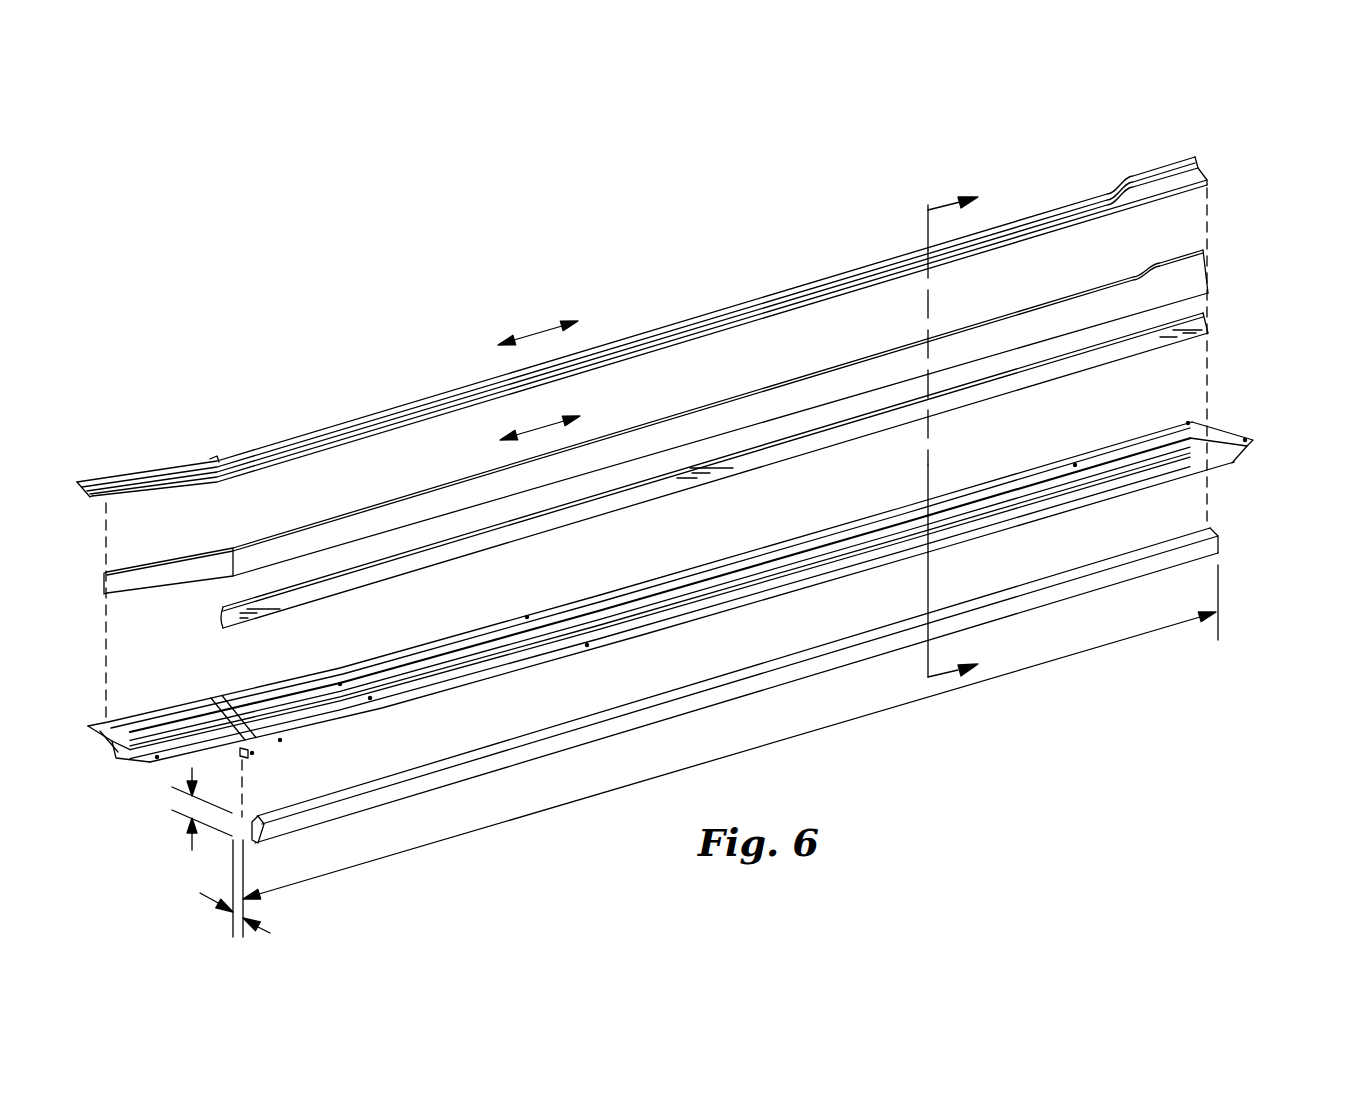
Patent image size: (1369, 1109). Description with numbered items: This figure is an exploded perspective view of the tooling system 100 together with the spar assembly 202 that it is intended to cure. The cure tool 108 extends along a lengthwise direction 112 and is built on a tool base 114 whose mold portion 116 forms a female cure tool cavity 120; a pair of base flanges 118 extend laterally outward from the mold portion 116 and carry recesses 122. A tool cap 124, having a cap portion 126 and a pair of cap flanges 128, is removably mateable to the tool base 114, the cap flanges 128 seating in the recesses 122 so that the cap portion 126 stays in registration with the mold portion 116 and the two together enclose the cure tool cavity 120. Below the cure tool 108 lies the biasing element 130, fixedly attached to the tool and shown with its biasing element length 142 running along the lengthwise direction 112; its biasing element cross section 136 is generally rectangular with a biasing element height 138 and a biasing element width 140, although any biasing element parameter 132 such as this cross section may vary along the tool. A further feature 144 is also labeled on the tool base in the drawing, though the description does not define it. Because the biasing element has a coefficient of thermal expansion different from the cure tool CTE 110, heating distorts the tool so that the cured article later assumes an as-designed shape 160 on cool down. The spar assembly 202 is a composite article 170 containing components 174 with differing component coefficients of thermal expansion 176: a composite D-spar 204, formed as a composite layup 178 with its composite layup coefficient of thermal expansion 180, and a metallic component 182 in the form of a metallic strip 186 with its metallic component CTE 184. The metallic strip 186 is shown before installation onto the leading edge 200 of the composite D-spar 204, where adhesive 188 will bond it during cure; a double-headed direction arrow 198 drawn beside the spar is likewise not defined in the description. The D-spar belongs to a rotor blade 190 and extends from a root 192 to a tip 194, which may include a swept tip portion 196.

The tooling system 100 is at (1260, 575).
The cure tool 108 is at (1200, 166).
The cure tool CTE 110 is at (1152, 166).
The lengthwise direction 112 is at (535, 339).
The tool base 114 is at (730, 612).
The mold portion 116 is at (128, 768).
The base flanges 118 is at (599, 589).
The cure tool cavity 120 is at (153, 716).
The recesses 122 is at (568, 618).
The tool cap 124 is at (698, 318).
The cap portion 126 is at (793, 290).
The cap flanges 128 is at (835, 275).
The biasing element 130 is at (712, 690).
The biasing element parameter 132 is at (645, 751).
The biasing element cross section 136 is at (259, 841).
The biasing element height 138 is at (190, 843).
The biasing element width 140 is at (203, 896).
The biasing element length 142 is at (468, 833).
The clip 144 is at (262, 752).
The as-designed shape 160 is at (295, 533).
The composite article 170 is at (1222, 243).
The components 174 is at (235, 545).
The component coefficients of thermal expansion 176 is at (423, 590).
The composite layup 178 is at (661, 423).
The composite layup coefficient of thermal expansion 180 is at (722, 401).
The metallic component 182 is at (678, 482).
The metallic component CTE 184 is at (773, 459).
The metallic strip 186 is at (836, 435).
The adhesive 188 is at (978, 380).
The rotor blade 190 is at (982, 326).
The root 192 is at (1213, 247).
The tip 194 is at (105, 590).
The swept tip portion 196 is at (165, 590).
The sliding direction 198 is at (540, 432).
The leading edge 200 is at (1055, 338).
The spar assembly 202 is at (363, 515).
The composite D-spar 204 is at (1132, 278).